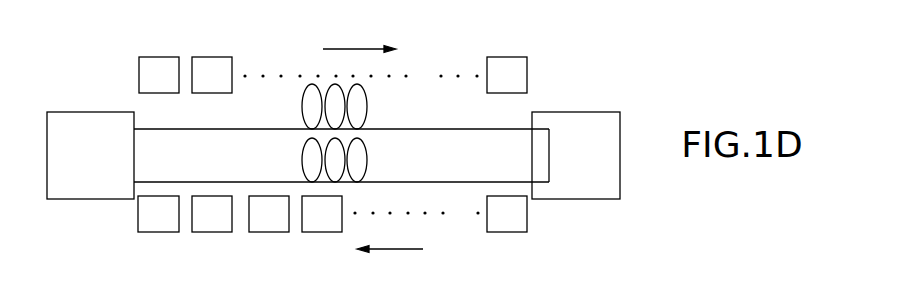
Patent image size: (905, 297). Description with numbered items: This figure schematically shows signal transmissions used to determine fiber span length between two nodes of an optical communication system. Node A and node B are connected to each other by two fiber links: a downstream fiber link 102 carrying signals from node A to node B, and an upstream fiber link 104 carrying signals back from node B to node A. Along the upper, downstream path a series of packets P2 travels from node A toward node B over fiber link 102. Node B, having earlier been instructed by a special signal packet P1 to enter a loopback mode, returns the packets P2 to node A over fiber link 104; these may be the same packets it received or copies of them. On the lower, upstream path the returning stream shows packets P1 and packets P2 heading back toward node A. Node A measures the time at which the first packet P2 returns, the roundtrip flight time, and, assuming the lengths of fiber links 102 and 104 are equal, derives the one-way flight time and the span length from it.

The fiber link 102 is at (426, 129).
The fiber link 104 is at (465, 182).
The node A is at (90, 155).
The node B is at (576, 155).
The signal packet P1 is at (185, 214).
The signal packet P2 is at (333, 144).